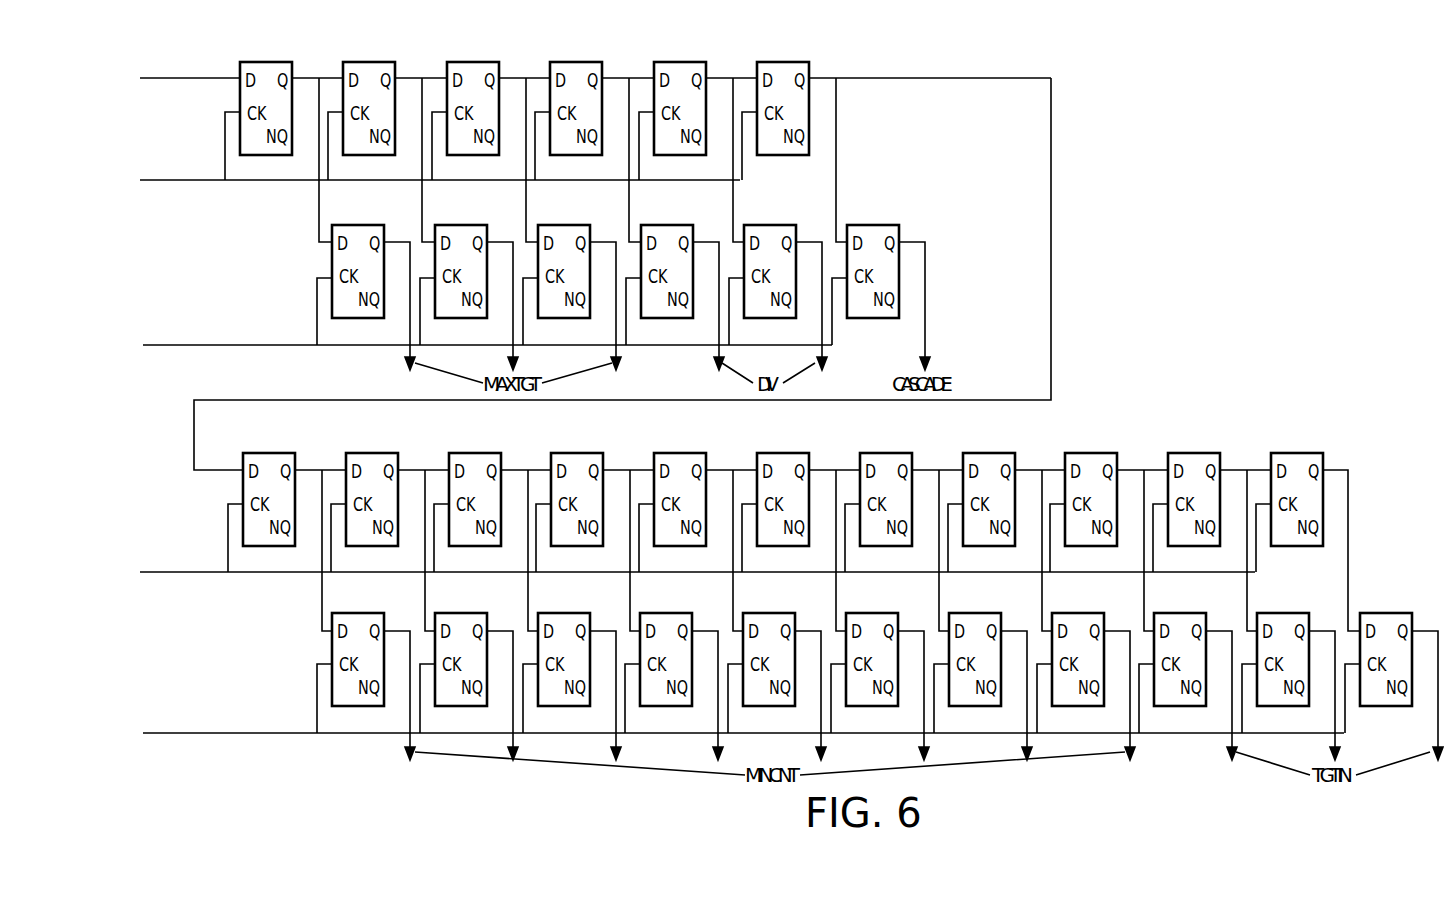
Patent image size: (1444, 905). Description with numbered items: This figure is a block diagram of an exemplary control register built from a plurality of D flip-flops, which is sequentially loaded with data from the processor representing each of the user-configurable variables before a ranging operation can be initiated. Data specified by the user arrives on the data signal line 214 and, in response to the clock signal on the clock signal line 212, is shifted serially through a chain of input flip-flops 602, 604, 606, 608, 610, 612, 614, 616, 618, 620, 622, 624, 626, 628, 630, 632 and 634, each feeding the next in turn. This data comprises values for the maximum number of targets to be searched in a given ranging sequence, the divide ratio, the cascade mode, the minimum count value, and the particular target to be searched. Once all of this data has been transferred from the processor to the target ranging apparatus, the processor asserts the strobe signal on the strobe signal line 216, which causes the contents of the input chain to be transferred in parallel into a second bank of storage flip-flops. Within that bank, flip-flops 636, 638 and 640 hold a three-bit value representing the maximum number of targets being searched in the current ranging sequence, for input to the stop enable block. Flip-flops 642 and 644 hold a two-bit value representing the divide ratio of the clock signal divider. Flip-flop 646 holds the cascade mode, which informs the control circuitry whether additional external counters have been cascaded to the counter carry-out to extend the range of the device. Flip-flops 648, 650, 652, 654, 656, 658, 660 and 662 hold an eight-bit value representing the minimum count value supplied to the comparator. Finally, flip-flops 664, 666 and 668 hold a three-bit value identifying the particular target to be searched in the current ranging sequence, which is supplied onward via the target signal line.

The data signal line 214 is at (182, 56).
The clock signal line 212 is at (691, 357).
The strobe signal line 216 is at (738, 520).
The flip-flop 602 is at (284, 131).
The flip-flop 604 is at (387, 131).
The flip-flop 606 is at (491, 131).
The flip-flop 608 is at (594, 131).
The flip-flop 610 is at (698, 131).
The flip-flop 612 is at (896, 131).
The flip-flop 614 is at (287, 521).
The flip-flop 616 is at (390, 521).
The flip-flop 618 is at (492, 521).
The flip-flop 620 is at (595, 521).
The flip-flop 622 is at (698, 521).
The flip-flop 624 is at (801, 521).
The flip-flop 626 is at (904, 521).
The flip-flop 628 is at (1006, 521).
The flip-flop 630 is at (1109, 521).
The flip-flop 632 is at (1212, 521).
The flip-flop 634 is at (1308, 521).
The flip-flop 636 is at (366, 277).
The flip-flop 638 is at (469, 277).
The flip-flop 640 is at (572, 277).
The flip-flop 642 is at (675, 277).
The flip-flop 644 is at (778, 277).
The flip-flop 646 is at (881, 277).
The flip-flop 648 is at (366, 666).
The flip-flop 650 is at (469, 666).
The flip-flop 652 is at (572, 666).
The flip-flop 654 is at (674, 666).
The flip-flop 656 is at (777, 666).
The flip-flop 658 is at (880, 666).
The flip-flop 660 is at (983, 666).
The flip-flop 662 is at (1086, 666).
The flip-flop 664 is at (1188, 666).
The flip-flop 666 is at (1291, 666).
The flip-flop 668 is at (1394, 666).